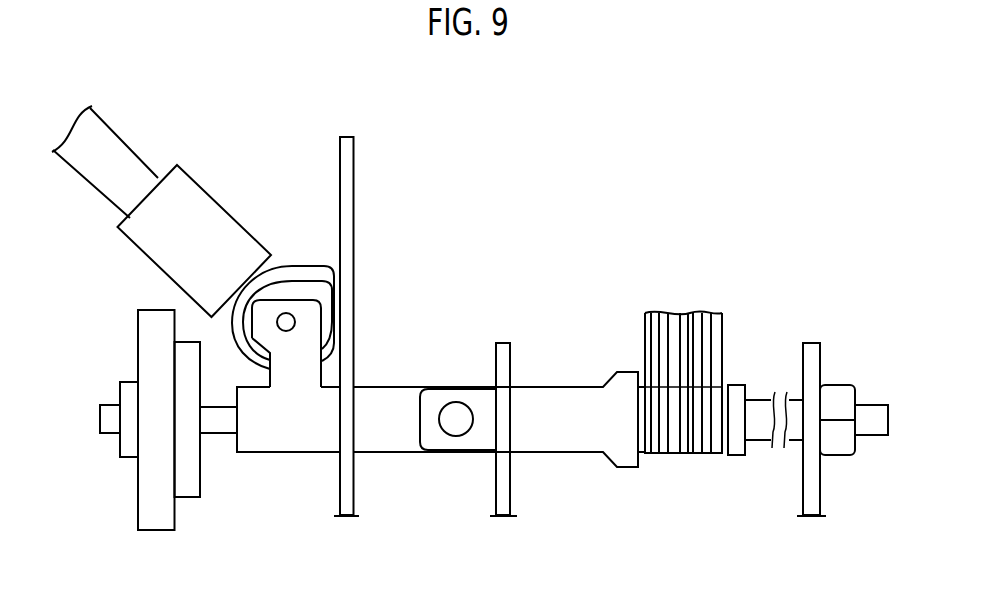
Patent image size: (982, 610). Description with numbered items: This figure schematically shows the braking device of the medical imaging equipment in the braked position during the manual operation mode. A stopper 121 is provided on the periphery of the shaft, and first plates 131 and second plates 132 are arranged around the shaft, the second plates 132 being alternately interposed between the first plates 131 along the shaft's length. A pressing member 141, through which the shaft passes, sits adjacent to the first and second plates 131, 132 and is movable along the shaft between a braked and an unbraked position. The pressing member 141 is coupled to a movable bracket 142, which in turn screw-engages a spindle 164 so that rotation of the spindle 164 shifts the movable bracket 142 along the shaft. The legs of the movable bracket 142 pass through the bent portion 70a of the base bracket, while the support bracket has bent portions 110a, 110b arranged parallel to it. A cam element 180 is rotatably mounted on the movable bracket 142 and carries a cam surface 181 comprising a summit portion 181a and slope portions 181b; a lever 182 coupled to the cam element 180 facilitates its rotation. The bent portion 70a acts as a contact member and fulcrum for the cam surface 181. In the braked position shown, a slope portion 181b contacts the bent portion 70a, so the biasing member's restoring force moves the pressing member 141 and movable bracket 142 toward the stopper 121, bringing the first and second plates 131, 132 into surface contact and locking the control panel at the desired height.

The bent portion 70a is at (350, 168).
The bent portion 110a is at (510, 353).
The bent portion 110b is at (812, 340).
The stopper 121 is at (763, 433).
The first plates 131 is at (645, 313).
The second plates 132 is at (645, 453).
The pressing member 141 is at (573, 443).
The movable bracket 142 is at (287, 443).
The spindle 164 is at (153, 518).
The cam element 180 is at (235, 182).
The cam surface 181 is at (373, 295).
The summit portion 181a is at (336, 261).
The slope portions 181b is at (315, 266).
The lever 182 is at (128, 155).